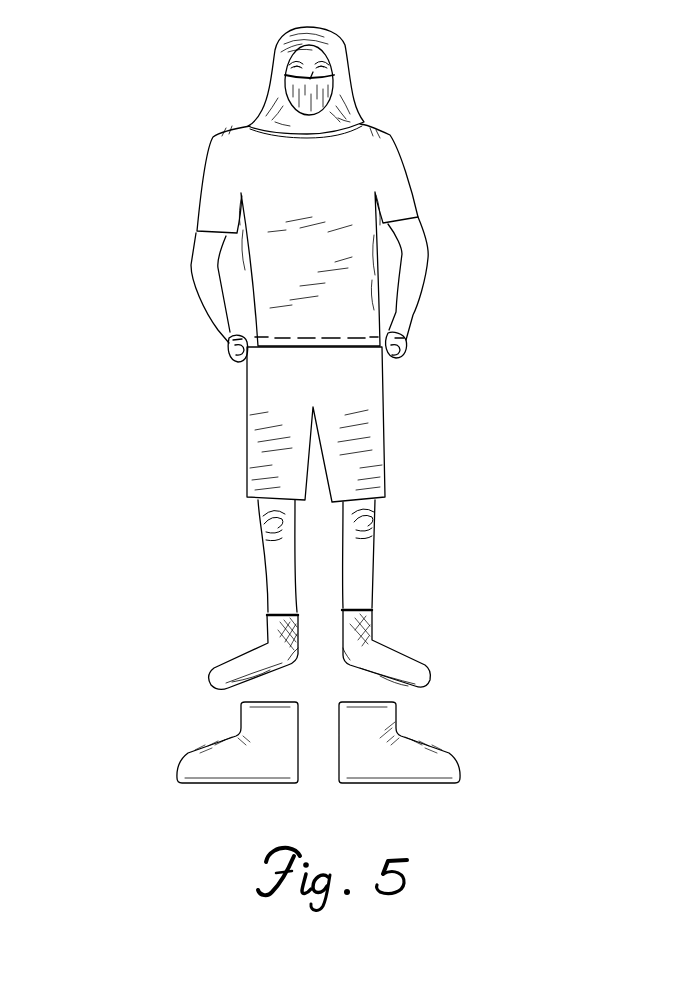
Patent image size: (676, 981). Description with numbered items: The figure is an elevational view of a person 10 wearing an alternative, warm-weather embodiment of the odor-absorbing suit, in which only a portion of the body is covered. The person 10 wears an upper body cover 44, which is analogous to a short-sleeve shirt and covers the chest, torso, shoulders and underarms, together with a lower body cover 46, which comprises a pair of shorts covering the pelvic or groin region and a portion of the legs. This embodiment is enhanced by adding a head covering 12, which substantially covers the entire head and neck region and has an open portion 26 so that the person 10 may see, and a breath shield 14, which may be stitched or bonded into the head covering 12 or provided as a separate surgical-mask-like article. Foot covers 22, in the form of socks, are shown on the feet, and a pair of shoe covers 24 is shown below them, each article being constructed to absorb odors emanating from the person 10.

The person 10 is at (142, 88).
The head covering 12 is at (350, 72).
The breath shield 14 is at (319, 97).
The open portion 26 is at (314, 50).
The upper body cover 44 is at (348, 163).
The lower body cover 46 is at (363, 397).
The foot covers 22 is at (247, 658).
The shoe covers 24 is at (243, 737).